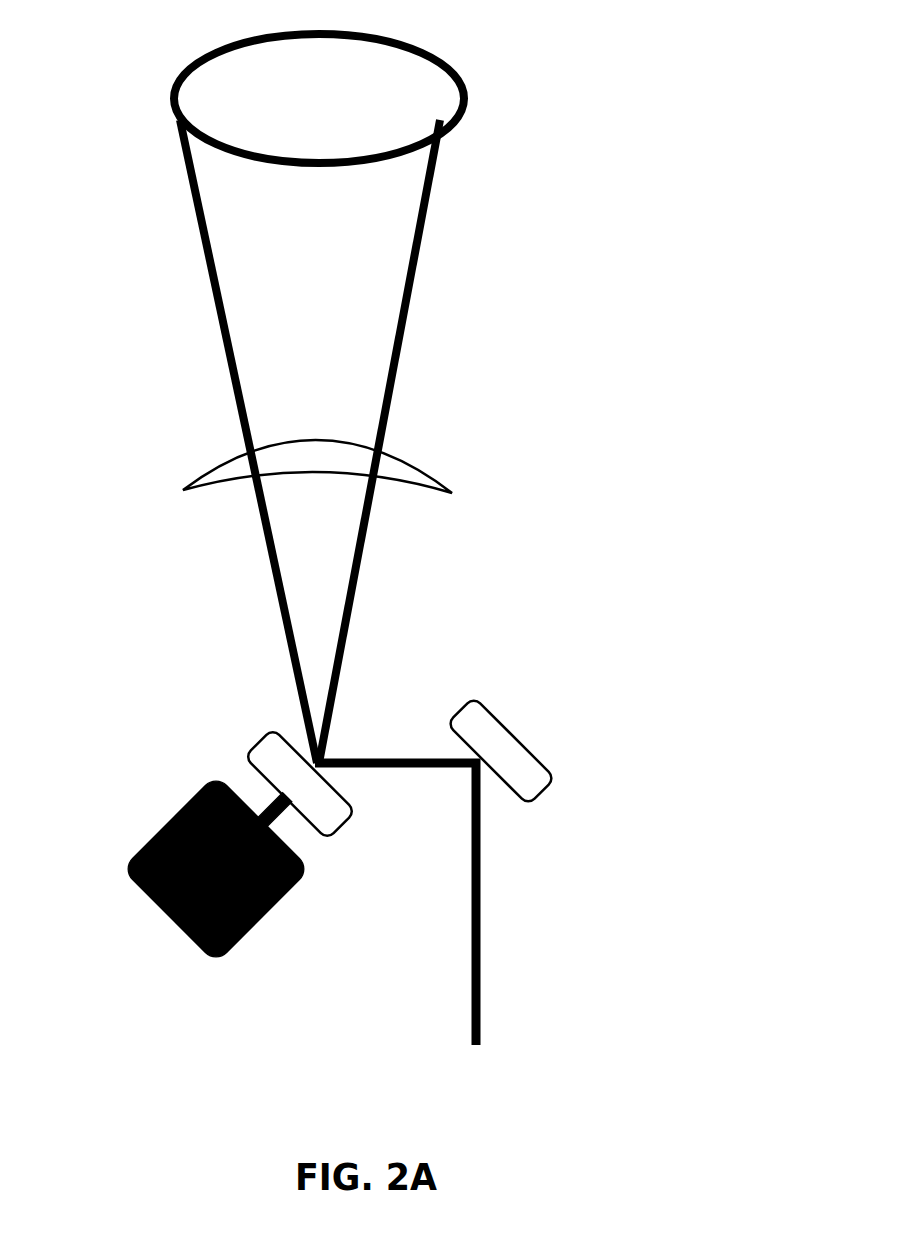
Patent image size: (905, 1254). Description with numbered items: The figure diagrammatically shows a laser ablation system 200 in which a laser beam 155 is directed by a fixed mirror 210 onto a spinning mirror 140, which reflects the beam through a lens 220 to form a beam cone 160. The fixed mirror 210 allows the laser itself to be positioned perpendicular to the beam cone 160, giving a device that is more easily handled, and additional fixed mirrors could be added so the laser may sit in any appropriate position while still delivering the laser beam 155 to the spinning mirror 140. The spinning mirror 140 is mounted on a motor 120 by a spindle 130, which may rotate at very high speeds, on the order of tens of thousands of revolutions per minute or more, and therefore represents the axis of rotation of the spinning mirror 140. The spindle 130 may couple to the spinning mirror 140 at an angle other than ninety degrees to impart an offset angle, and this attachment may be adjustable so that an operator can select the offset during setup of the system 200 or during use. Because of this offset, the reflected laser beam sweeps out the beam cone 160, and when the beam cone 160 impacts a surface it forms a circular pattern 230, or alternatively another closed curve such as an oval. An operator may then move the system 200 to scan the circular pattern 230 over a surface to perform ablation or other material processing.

The system 200 is at (660, 152).
The circular pattern 230 is at (338, 100).
The beam cone 160 is at (207, 302).
The lens 220 is at (423, 460).
The laser beam 155 is at (478, 915).
The spinning mirror 140 is at (310, 789).
The fixed mirror 210 is at (508, 755).
The motor 120 is at (163, 810).
The spindle 130 is at (265, 797).